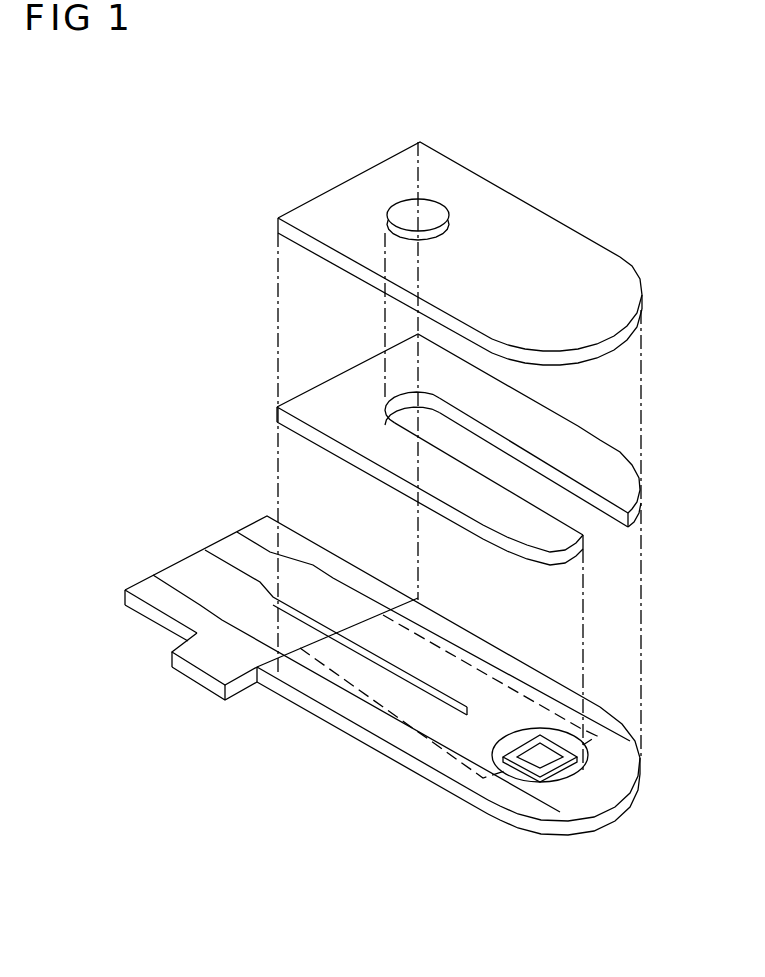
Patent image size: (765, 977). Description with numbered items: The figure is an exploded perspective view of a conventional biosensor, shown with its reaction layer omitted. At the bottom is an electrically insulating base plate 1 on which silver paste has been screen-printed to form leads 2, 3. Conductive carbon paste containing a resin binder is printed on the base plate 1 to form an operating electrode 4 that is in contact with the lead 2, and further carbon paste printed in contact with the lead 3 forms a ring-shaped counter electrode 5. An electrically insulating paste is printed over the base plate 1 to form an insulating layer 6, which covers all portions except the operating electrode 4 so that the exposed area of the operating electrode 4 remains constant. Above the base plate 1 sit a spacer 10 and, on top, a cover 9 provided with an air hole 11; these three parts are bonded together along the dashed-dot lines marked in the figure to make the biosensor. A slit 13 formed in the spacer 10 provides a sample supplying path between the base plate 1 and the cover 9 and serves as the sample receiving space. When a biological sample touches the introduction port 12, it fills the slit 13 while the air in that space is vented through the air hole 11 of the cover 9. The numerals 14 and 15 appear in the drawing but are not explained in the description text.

The electrically insulating base plate 1 is at (176, 584).
The lead 2 is at (250, 642).
The lead 3 is at (333, 578).
The operating electrode 4 is at (537, 762).
The counter electrode 5 is at (566, 770).
The insulating layer 6 is at (366, 680).
The cover 9 is at (316, 212).
The spacer 10 is at (334, 380).
The air hole 11 is at (413, 206).
The introduction port 12 is at (603, 531).
The slit 13 is at (534, 478).
The conductor strip 14 is at (208, 560).
The hidden conductor 15 is at (450, 707).